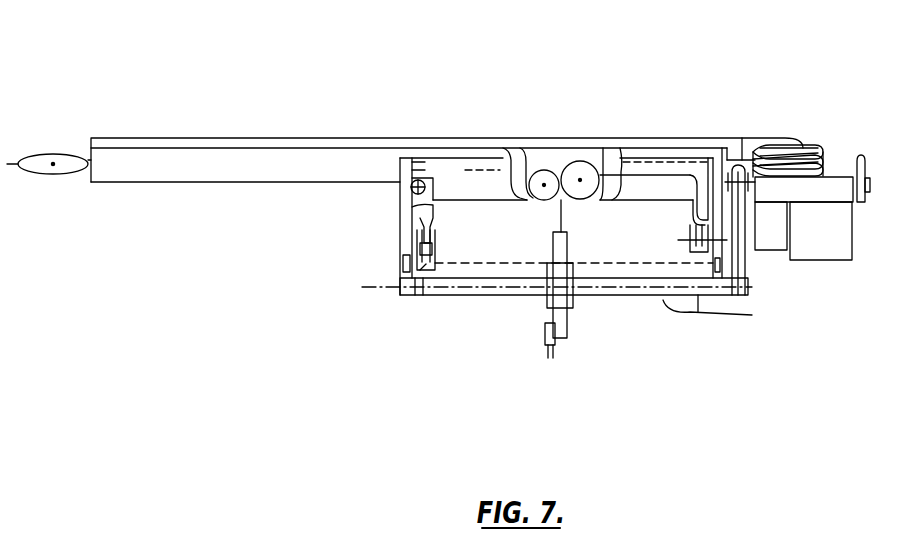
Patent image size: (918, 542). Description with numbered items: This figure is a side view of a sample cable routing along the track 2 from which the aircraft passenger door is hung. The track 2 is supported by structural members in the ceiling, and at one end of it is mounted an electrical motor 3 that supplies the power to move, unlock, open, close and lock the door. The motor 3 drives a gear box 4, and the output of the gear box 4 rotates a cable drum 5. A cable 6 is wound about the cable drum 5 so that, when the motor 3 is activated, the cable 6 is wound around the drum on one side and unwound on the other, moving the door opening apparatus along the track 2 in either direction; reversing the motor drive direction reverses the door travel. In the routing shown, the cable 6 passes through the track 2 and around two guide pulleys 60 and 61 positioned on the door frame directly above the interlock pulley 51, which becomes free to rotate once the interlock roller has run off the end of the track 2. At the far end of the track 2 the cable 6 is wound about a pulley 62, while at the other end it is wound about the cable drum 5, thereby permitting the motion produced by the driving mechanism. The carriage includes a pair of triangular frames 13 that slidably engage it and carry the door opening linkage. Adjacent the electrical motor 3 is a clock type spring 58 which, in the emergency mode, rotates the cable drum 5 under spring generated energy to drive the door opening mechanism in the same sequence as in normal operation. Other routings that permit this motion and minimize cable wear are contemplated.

The track 2 is at (215, 138).
The electrical motor 3 is at (772, 250).
The gear box 4 is at (837, 173).
The cable drum 5 is at (813, 143).
The cable 6 is at (520, 148).
The triangular frame 13 is at (398, 225).
The interlock pulley 51 is at (565, 320).
The clock type spring 58 is at (853, 260).
The pulley 60 is at (545, 170).
The pulley 61 is at (585, 161).
The pulley 62 is at (58, 153).